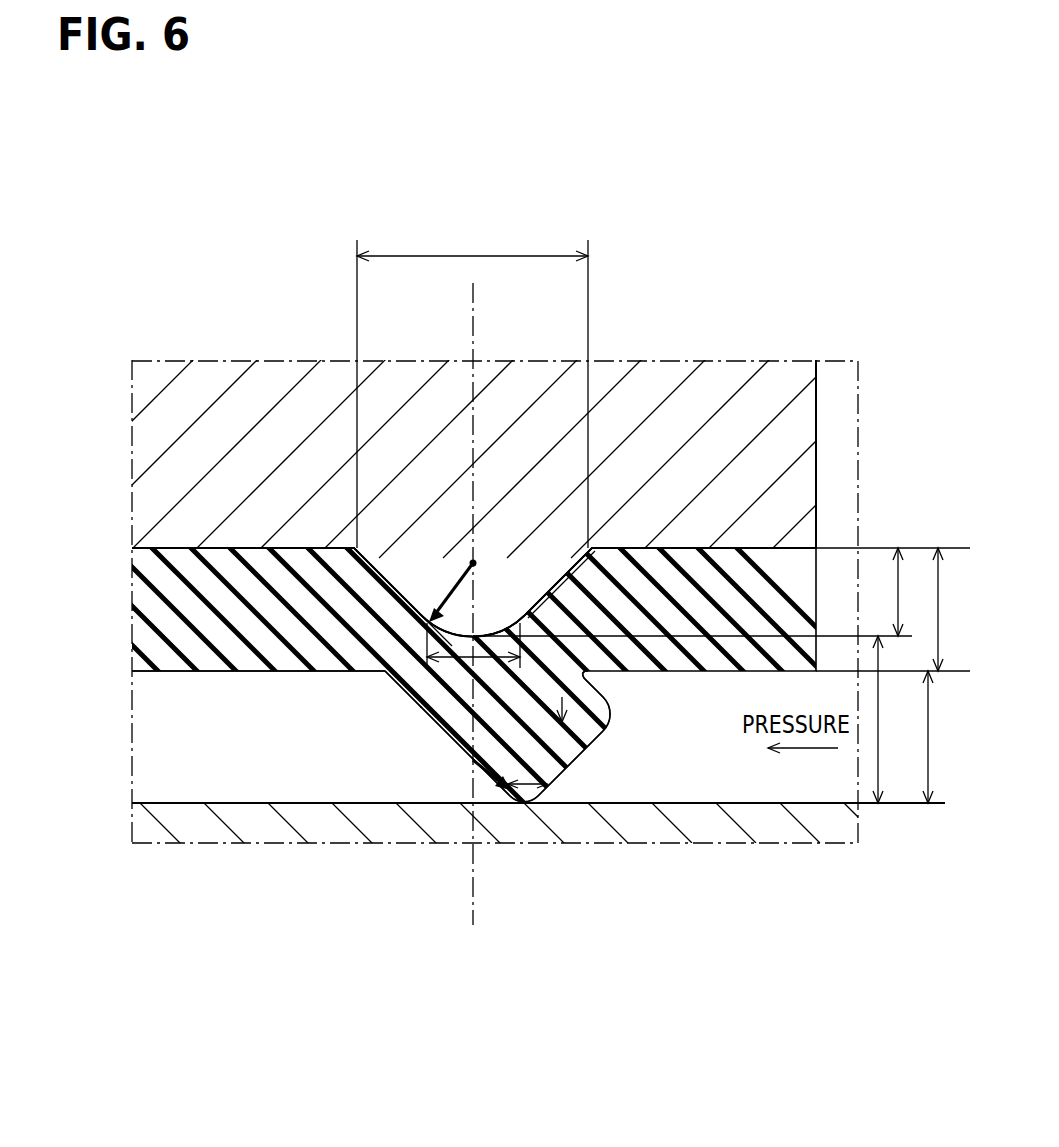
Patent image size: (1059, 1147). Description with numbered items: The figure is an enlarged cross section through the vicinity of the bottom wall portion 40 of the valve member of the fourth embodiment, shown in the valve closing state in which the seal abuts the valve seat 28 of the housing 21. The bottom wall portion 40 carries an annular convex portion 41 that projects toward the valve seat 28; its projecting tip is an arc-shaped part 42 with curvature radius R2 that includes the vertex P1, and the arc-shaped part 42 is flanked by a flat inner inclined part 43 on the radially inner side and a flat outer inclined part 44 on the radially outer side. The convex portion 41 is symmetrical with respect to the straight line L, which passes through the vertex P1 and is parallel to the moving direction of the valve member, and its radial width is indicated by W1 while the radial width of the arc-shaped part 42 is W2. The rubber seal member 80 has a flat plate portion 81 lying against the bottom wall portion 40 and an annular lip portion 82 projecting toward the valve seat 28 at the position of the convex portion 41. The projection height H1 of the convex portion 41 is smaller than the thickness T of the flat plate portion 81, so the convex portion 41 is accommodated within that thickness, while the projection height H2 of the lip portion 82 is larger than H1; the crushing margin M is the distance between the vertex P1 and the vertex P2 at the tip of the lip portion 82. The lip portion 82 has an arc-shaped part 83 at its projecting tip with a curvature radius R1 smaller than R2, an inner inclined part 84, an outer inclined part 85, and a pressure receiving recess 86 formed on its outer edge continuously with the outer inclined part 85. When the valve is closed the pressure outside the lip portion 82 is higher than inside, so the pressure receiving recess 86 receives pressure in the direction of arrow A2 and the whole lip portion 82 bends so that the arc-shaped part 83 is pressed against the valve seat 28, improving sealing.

The bottom wall portion 40 is at (780, 388).
The convex portion 41 is at (404, 574).
The arc-shaped part 42 is at (420, 606).
The inner inclined part 43 is at (395, 598).
The outer inclined part 44 is at (566, 592).
The rubber seal member 80 is at (190, 673).
The flat plate portion 81 is at (288, 658).
The lip portion 82 is at (436, 722).
The arc-shaped part 83 is at (520, 805).
The inner inclined part 84 is at (430, 640).
The outer inclined part 85 is at (600, 742).
The pressure receiving recess 86 is at (612, 700).
The housing 21 is at (826, 828).
The valve seat 28 is at (243, 803).
The straight line L is at (478, 288).
The radial width W1 is at (472, 386).
The radial width of arc-shaped part W2 is at (560, 790).
The curvature radius R1 is at (552, 800).
The curvature radius R2 is at (424, 602).
The vertex P1 is at (421, 707).
The vertex P2 is at (532, 805).
The pressure direction arrow A2 is at (605, 722).
The projection height of convex portion H1 is at (910, 592).
The projection height of lip portion H2 is at (942, 737).
The thickness of flat plate portion T is at (946, 609).
The crushing margin M is at (888, 719).